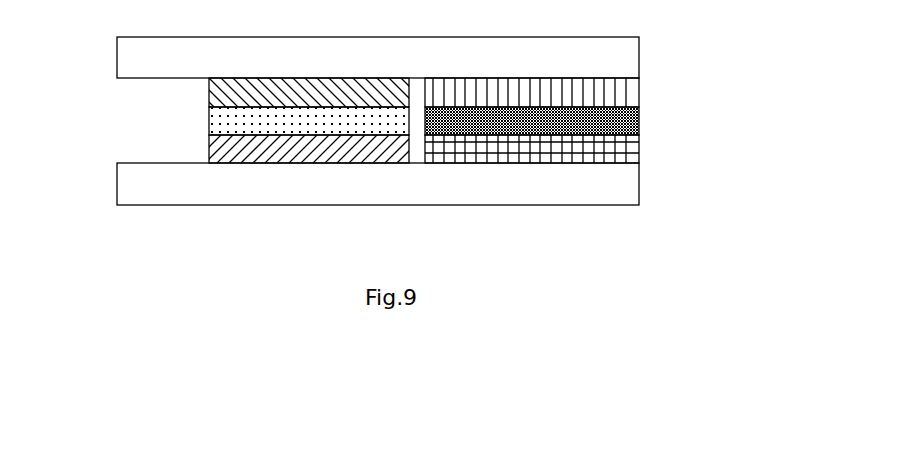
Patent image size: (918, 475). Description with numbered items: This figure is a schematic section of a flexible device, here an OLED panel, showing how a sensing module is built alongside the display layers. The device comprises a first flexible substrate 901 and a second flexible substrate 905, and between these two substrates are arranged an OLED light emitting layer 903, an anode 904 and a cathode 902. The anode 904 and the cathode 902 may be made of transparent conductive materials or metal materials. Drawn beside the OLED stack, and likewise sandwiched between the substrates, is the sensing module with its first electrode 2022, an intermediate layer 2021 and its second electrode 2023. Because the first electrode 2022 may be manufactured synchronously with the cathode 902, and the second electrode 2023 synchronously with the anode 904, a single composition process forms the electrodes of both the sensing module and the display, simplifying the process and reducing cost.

The first flexible substrate 901 is at (610, 63).
The cathode 902 is at (620, 95).
The OLED light emitting layer 903 is at (640, 115).
The anode 904 is at (627, 150).
The second flexible substrate 905 is at (625, 188).
The intermediate layer 2021 is at (210, 123).
The first electrode 2022 is at (210, 96).
The second electrode 2023 is at (210, 150).